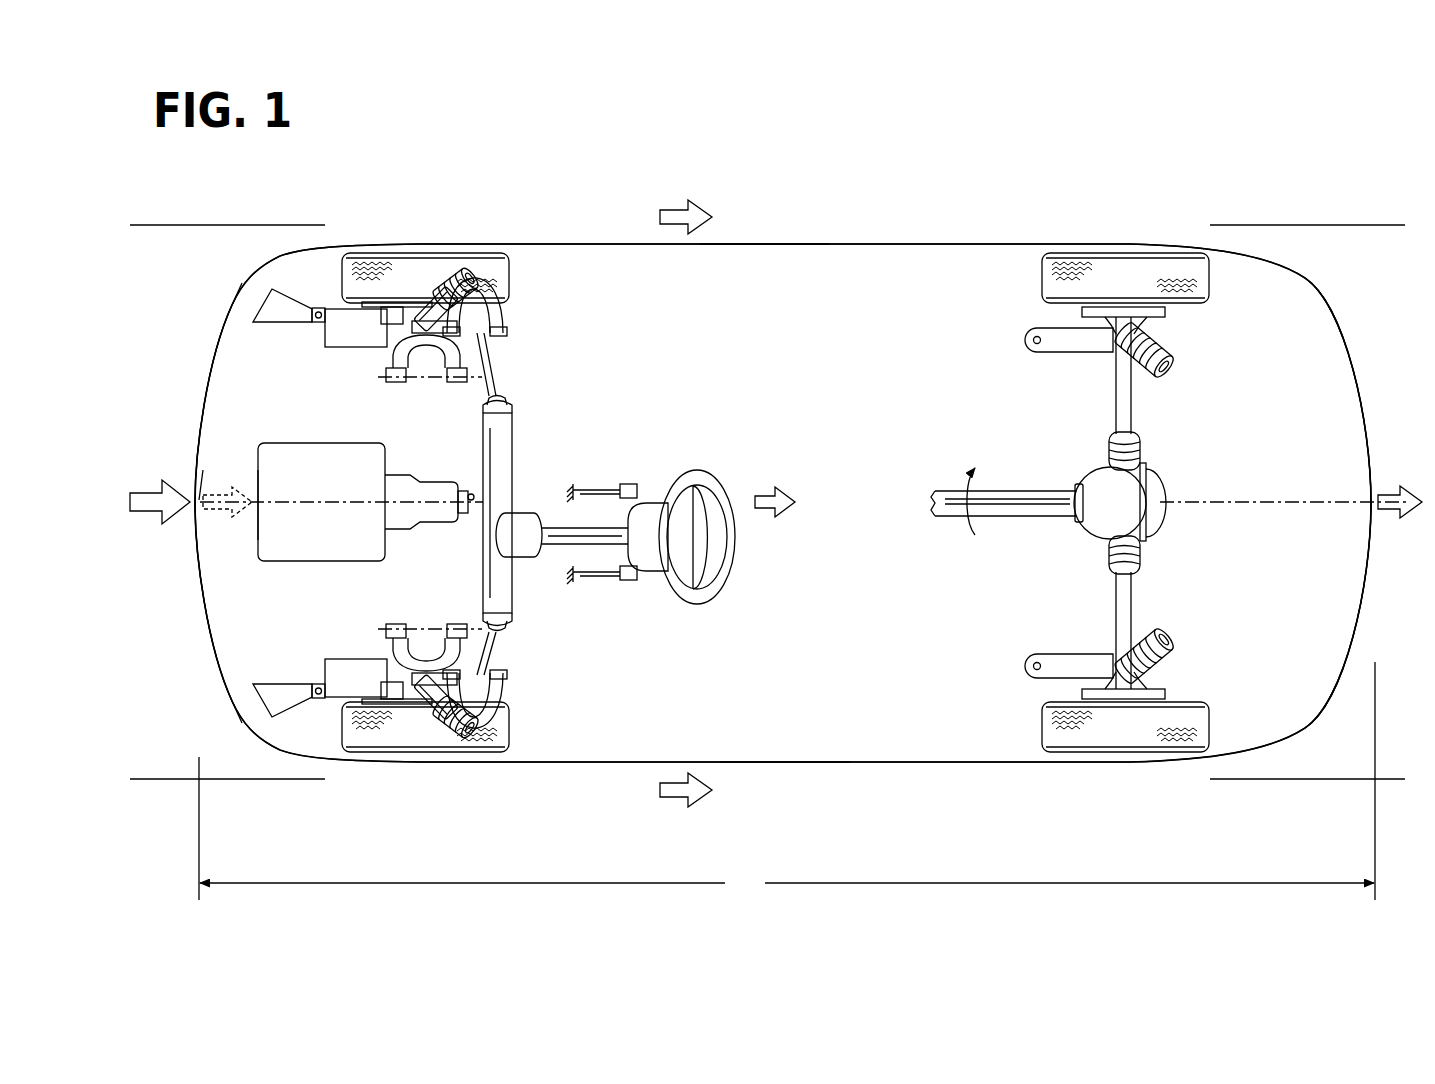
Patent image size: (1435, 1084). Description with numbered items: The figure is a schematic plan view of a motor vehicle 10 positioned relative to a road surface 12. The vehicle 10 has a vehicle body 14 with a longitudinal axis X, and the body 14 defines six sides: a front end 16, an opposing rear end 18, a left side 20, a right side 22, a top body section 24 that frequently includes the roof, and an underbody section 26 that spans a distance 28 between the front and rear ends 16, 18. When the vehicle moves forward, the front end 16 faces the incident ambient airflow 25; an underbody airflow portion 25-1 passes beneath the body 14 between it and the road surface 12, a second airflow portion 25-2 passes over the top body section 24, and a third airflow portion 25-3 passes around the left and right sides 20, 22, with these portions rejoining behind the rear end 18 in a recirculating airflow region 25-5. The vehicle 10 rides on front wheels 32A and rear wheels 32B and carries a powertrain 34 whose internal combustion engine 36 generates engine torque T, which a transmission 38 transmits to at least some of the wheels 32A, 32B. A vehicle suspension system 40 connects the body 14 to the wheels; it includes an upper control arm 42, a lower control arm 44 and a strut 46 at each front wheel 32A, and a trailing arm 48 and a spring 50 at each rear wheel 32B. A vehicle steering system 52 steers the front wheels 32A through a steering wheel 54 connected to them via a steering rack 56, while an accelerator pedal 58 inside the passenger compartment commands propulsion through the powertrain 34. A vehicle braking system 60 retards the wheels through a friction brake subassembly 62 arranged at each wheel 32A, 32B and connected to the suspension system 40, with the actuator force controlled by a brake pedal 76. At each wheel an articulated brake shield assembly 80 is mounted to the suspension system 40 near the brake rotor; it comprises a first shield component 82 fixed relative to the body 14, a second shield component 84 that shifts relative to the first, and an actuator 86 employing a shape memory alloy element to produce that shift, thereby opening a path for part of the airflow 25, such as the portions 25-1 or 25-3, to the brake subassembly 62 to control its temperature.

The motor vehicle 10 is at (1124, 158).
The road surface 12 is at (1392, 303).
The vehicle body 14 is at (874, 238).
The front end 16 is at (203, 428).
The rear end 18 is at (1375, 585).
The left side 20 is at (780, 764).
The right side 22 is at (758, 243).
The top body section 24 is at (873, 732).
The ambient airflow 25 is at (150, 490).
The underbody airflow portion 25-1 is at (205, 525).
The second airflow portion 25-2 is at (772, 512).
The third airflow portion 25-3 is at (677, 206).
The recirculating airflow region 25-5 is at (1390, 493).
The underbody section 26 is at (230, 612).
The distance 28 is at (787, 781).
The front wheels 32A is at (395, 249).
The rear wheels 32B is at (1150, 250).
The powertrain 34 is at (254, 521).
The internal combustion engine 36 is at (278, 492).
The transmission 38 is at (423, 488).
The vehicle suspension system 40 is at (548, 332).
The upper control arm 42 is at (487, 298).
The lower control arm 44 is at (446, 352).
The strut 46 is at (453, 290).
The trailing arm 48 is at (1027, 340).
The spring 50 is at (1183, 372).
The vehicle steering system 52 is at (541, 494).
The steering wheel 54 is at (718, 482).
The steering rack 56 is at (498, 462).
The accelerator pedal 58 is at (632, 486).
The vehicle braking system 60 is at (378, 332).
The friction brake subassembly 62 is at (375, 322).
The brake pedal 76 is at (636, 582).
The articulated brake shield assembly 80 is at (224, 300).
The first shield component 82 is at (268, 290).
The second shield component 84 is at (300, 314).
The actuator 86 is at (396, 305).
The engine torque T is at (970, 472).
The longitudinal axis X is at (1242, 508).